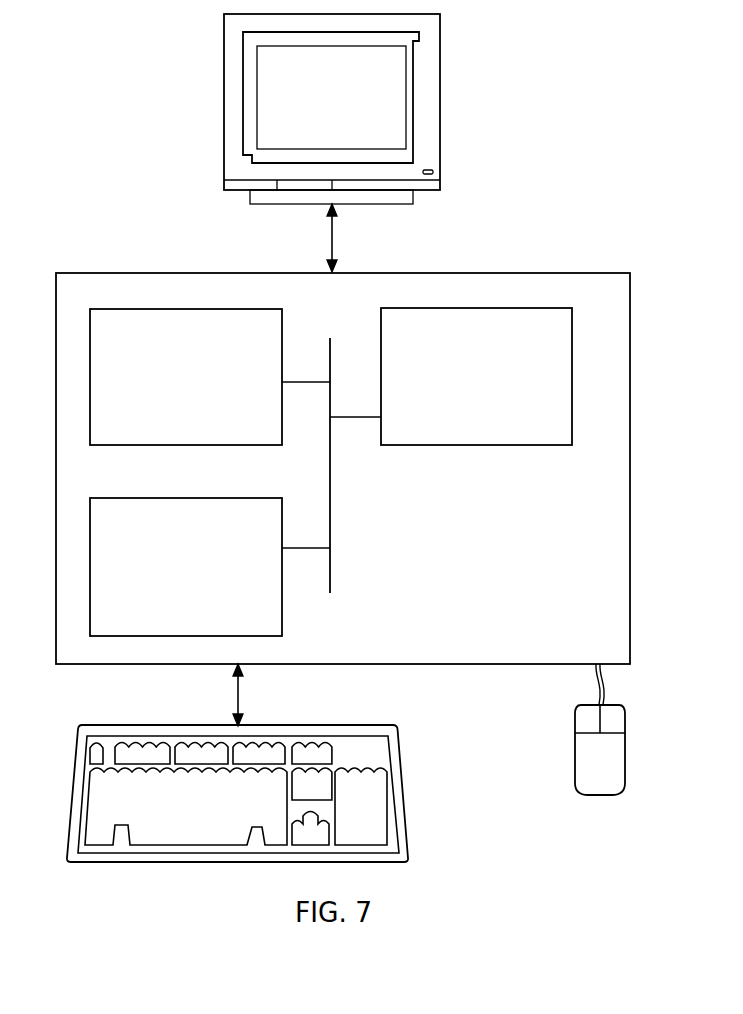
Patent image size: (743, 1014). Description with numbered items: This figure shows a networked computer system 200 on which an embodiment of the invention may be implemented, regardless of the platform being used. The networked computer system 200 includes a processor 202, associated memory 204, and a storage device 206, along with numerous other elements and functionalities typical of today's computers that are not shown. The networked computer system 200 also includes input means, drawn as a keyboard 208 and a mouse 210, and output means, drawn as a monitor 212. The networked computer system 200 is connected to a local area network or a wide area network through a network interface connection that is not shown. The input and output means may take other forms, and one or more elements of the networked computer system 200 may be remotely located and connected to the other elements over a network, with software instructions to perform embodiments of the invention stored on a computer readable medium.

The networked computer system 200 is at (648, 144).
The processor 202 is at (476, 388).
The memory 204 is at (167, 388).
The storage device 206 is at (167, 578).
The keyboard 208 is at (162, 828).
The mouse 210 is at (581, 770).
The monitor 212 is at (313, 112).